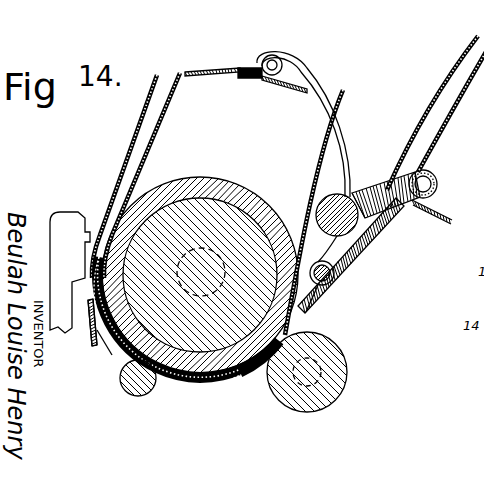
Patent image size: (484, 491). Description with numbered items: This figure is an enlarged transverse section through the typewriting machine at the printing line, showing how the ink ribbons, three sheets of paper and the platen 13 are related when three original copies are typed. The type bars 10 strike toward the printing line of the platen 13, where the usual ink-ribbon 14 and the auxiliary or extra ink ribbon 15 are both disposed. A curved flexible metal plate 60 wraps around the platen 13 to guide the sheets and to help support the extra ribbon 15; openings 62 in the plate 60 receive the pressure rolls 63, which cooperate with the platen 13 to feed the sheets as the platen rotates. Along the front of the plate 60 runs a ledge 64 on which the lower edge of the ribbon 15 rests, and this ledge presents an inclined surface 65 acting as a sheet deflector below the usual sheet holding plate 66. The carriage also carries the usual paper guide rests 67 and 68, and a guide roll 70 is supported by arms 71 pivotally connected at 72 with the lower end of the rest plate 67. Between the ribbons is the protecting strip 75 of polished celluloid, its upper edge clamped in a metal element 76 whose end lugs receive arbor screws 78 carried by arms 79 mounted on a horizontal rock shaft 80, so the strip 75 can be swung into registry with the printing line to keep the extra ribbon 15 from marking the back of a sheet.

The type bars 10 is at (68, 220).
The platen 13 is at (198, 177).
The ink-ribbon 14 is at (84, 326).
The auxiliary ink ribbon 15 is at (112, 272).
The curved flexible metal plate 60 is at (306, 248).
The openings 62 is at (305, 333).
The pressure rolls 63 is at (143, 394).
The ledge 64 is at (110, 328).
The inclined surface 65 is at (123, 340).
The sheet holding plate 66 is at (92, 348).
The paper guide rest 67 is at (458, 95).
The paper guide rest 68 is at (370, 250).
The guide roll 70 is at (333, 195).
The arms 71 is at (377, 192).
The pivotal connection 72 is at (430, 181).
The strip 75 is at (203, 72).
The metal element 76 is at (247, 68).
The arbor screws 78 is at (272, 56).
The arms 79 is at (350, 141).
The rock shaft 80 is at (332, 281).